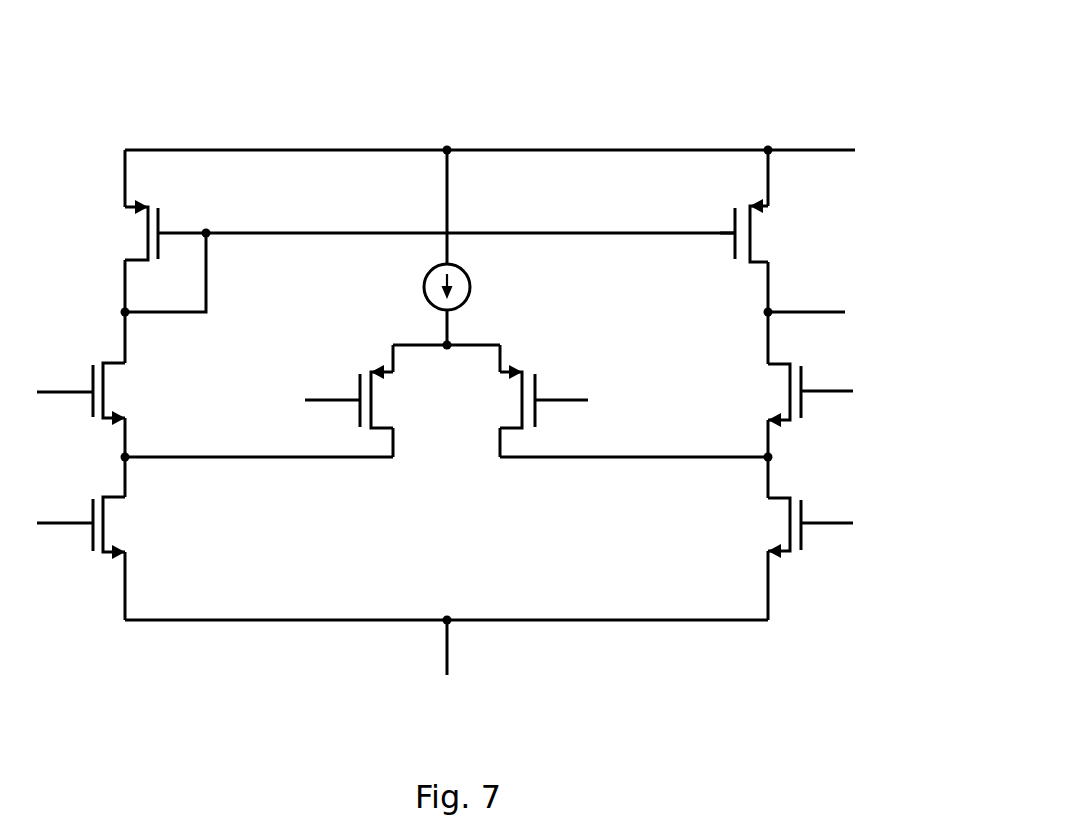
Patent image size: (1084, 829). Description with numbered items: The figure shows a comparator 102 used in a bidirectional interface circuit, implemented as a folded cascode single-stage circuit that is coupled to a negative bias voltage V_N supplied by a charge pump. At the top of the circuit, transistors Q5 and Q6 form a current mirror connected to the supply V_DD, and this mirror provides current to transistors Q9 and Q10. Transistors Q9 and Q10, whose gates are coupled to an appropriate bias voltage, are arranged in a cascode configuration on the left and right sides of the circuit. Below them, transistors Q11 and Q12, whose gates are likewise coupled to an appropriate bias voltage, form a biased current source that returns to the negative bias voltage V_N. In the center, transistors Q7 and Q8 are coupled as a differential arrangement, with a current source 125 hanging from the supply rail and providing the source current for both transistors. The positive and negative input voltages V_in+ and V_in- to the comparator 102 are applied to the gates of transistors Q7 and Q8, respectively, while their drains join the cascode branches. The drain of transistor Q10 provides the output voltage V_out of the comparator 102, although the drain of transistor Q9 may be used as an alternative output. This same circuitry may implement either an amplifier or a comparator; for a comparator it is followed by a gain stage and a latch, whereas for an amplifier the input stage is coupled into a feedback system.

The comparator 102 is at (545, 376).
The current source 125 is at (465, 272).
The transistor Q5 is at (132, 230).
The transistor Q6 is at (779, 230).
The transistor Q7 is at (364, 396).
The transistor Q8 is at (527, 396).
The transistor Q9 is at (109, 394).
The transistor Q10 is at (776, 395).
The transistor Q11 is at (116, 546).
The transistor Q12 is at (773, 547).